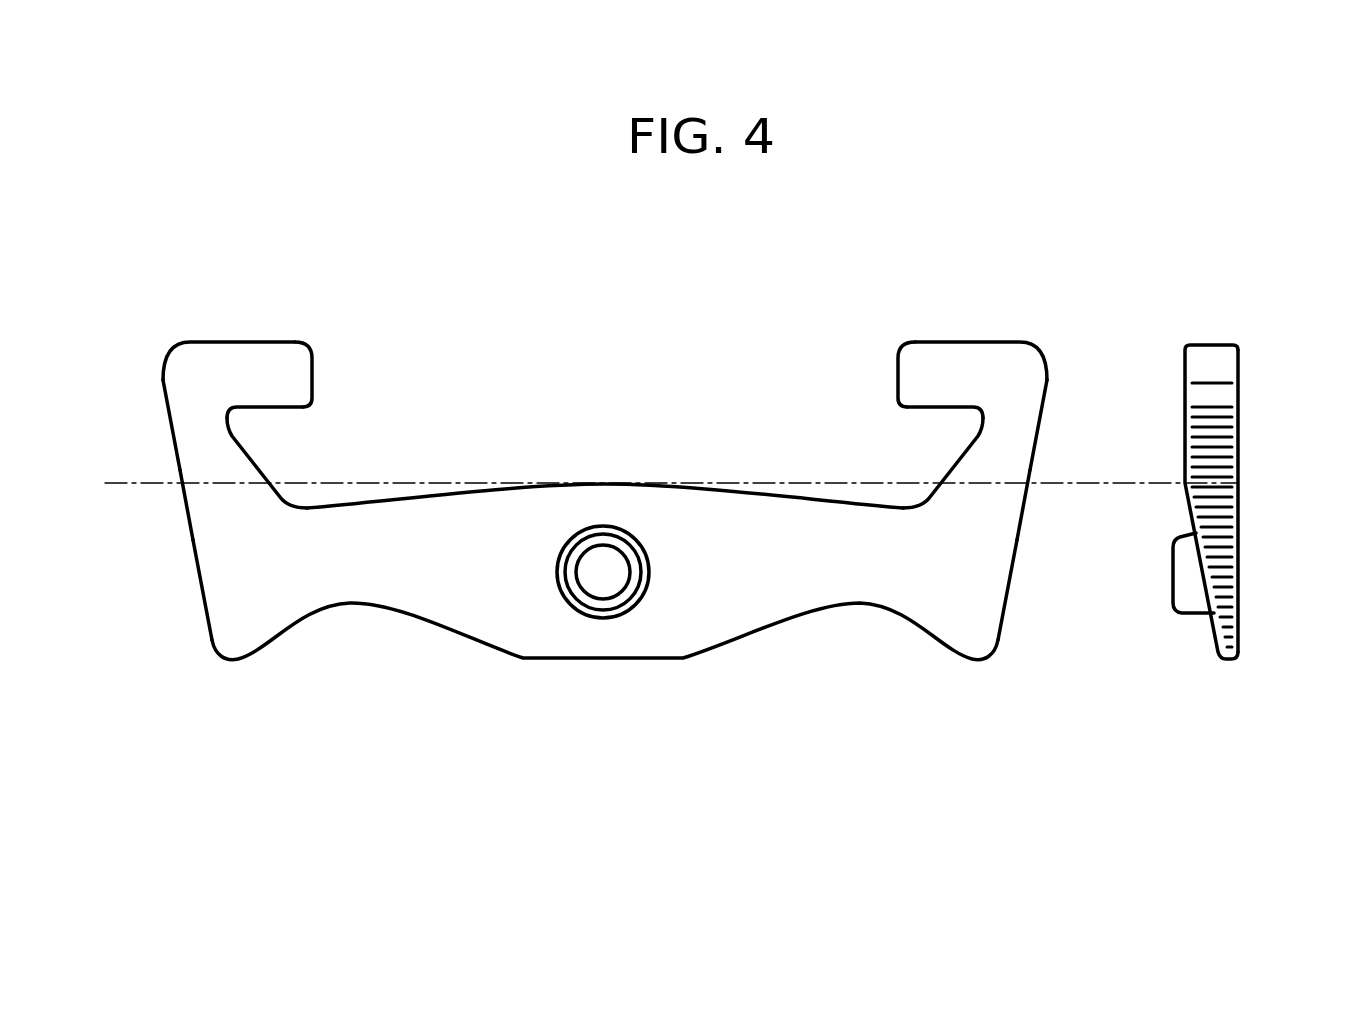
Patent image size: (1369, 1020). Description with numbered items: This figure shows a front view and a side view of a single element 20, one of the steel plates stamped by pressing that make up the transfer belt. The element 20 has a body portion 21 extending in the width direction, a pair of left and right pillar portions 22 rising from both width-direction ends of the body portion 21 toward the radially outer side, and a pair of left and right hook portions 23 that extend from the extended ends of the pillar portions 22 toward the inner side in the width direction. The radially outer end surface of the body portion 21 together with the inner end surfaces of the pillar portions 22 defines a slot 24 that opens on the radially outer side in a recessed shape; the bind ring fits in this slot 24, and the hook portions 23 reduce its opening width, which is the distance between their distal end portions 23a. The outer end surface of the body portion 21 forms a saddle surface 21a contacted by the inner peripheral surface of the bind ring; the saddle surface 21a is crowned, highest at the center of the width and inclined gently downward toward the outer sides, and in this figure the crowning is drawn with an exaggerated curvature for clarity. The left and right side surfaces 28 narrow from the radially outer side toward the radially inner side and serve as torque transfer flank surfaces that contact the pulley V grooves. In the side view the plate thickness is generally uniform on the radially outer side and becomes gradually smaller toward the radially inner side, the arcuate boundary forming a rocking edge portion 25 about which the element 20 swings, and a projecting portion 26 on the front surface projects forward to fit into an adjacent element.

The element 20 is at (858, 668).
The body portion 21 is at (727, 636).
The saddle surface 21a is at (490, 490).
The pillar portion 22 is at (198, 420).
The hook portion 23 is at (232, 340).
The distal end portion 23a is at (313, 370).
The slot 24 is at (647, 448).
The rocking edge portion 25 is at (205, 492).
The projecting portion 26 is at (577, 602).
The side surface 28 is at (200, 582).